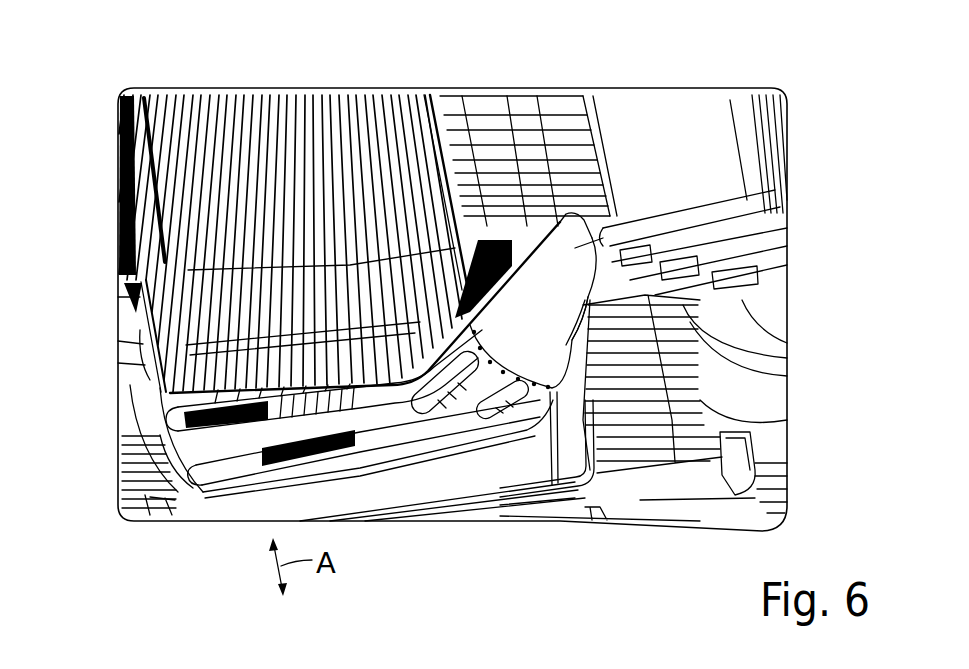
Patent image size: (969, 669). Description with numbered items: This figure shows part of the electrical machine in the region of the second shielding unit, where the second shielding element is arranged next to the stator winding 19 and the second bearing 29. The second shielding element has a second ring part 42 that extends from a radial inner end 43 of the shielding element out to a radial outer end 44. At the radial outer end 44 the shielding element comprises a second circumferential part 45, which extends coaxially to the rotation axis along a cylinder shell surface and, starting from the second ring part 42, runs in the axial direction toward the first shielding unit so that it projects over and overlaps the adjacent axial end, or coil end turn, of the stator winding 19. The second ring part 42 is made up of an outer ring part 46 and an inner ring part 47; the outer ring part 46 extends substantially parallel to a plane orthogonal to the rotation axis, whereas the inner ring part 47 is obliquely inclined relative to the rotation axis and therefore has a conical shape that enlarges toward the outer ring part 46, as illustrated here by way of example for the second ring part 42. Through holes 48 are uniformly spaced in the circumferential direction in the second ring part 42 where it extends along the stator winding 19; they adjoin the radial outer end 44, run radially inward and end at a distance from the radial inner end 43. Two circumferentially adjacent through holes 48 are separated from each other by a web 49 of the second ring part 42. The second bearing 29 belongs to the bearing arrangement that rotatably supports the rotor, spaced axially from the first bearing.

The stator winding 19 is at (280, 110).
The radial inner end 43 is at (560, 256).
The second bearing 29 is at (790, 323).
The second circumferential part 45 is at (150, 365).
The radial outer end 44 is at (155, 430).
The outer ring part 46 is at (227, 490).
The through holes 48 is at (397, 400).
The web 49 is at (442, 420).
The second ring part 42 is at (522, 440).
The inner ring part 47 is at (580, 365).